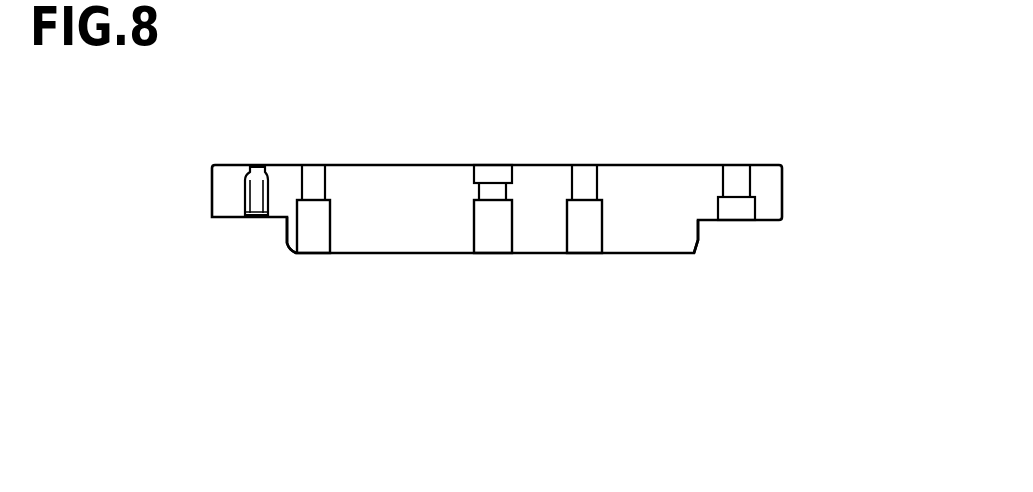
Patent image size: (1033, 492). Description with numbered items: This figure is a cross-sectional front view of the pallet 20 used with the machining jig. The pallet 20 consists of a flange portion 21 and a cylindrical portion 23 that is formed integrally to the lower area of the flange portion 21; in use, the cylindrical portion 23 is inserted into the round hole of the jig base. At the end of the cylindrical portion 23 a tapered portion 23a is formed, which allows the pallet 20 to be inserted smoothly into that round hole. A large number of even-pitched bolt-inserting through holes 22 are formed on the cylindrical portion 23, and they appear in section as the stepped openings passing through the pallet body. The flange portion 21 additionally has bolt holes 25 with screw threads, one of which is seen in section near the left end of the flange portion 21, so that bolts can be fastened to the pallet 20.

The pallet 20 is at (838, 160).
The flange portion 21 is at (767, 207).
The bolt-inserting through holes 22 is at (320, 213).
The cylindrical portion 23 is at (702, 233).
The tapered portion 23a is at (287, 245).
The bolt holes 25 is at (250, 192).